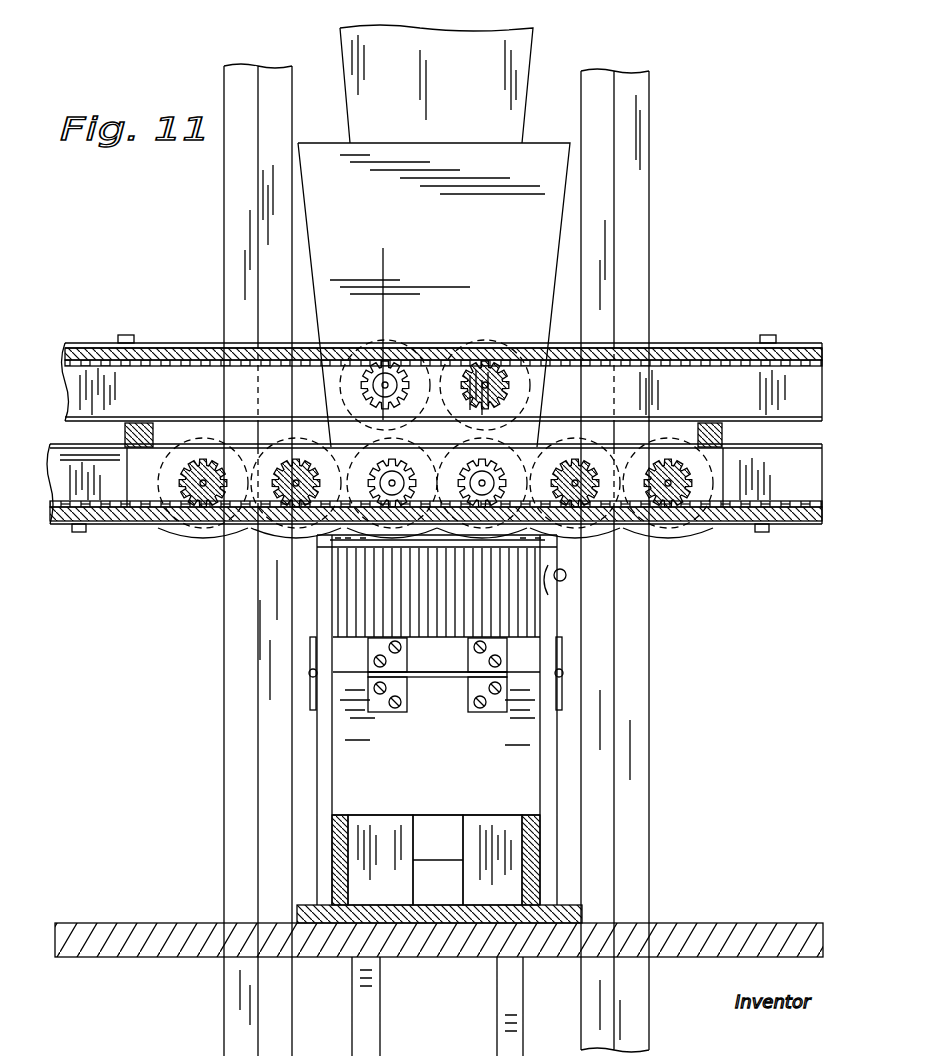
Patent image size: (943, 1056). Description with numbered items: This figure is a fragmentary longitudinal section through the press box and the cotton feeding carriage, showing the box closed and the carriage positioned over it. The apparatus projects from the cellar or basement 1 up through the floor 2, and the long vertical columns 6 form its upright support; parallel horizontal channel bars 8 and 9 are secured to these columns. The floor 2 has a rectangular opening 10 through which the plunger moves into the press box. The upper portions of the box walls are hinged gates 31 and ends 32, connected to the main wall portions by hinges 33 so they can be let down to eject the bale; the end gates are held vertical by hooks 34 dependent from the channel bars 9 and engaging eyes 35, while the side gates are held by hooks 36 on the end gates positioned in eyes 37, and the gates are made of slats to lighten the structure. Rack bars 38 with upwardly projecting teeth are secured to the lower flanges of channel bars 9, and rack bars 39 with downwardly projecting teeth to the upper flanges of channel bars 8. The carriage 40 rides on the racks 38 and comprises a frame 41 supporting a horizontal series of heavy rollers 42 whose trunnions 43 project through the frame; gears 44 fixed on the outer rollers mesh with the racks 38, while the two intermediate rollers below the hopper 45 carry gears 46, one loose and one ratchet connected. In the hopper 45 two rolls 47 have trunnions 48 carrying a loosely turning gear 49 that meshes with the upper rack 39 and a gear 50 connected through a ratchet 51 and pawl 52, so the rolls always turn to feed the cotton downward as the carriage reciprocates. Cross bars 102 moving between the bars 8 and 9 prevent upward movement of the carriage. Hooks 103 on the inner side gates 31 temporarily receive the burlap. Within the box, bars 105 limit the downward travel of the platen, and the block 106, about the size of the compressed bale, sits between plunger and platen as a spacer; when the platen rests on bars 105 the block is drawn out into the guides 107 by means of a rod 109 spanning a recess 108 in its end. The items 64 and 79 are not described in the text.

The cellar or basement 1 is at (520, 1006).
The floor 2 is at (735, 930).
The vertical columns 6 is at (232, 247).
The horizontal channel bars 8 is at (442, 382).
The horizontal channel bars 9 is at (434, 488).
The rectangular openings 10 is at (330, 940).
The hinged gates 31 is at (313, 608).
The ends 32 is at (350, 652).
The hinges 33 is at (309, 676).
The hooks 34 is at (335, 540).
The eyes 35 is at (335, 560).
The hooks 36 is at (335, 552).
The eyes 37 is at (335, 545).
The rack bars 38 is at (785, 525).
The rack bars 39 is at (775, 352).
The carriages 40 is at (140, 483).
The frame 41 is at (135, 525).
The rollers 42 is at (500, 1026).
The trunnions 43 is at (203, 483).
The gears 44 is at (536, 461).
The hopper 45 is at (560, 211).
The gears 46 is at (300, 470).
The rolls 47 is at (400, 360).
The trunnions 48 is at (300, 485).
The loosely turning gear 49 is at (492, 362).
The gear 50 is at (370, 362).
The ratchet 51 is at (360, 385).
The pawl 52 is at (365, 400).
The feed chute 64 is at (500, 52).
The gate 79 is at (515, 745).
The cross bars 102 is at (125, 437).
The hooks 103 is at (557, 596).
The bars 105 is at (340, 838).
The block 106 is at (503, 845).
The guides 107 is at (440, 925).
The recess 108 is at (440, 858).
The rod 109 is at (445, 825).